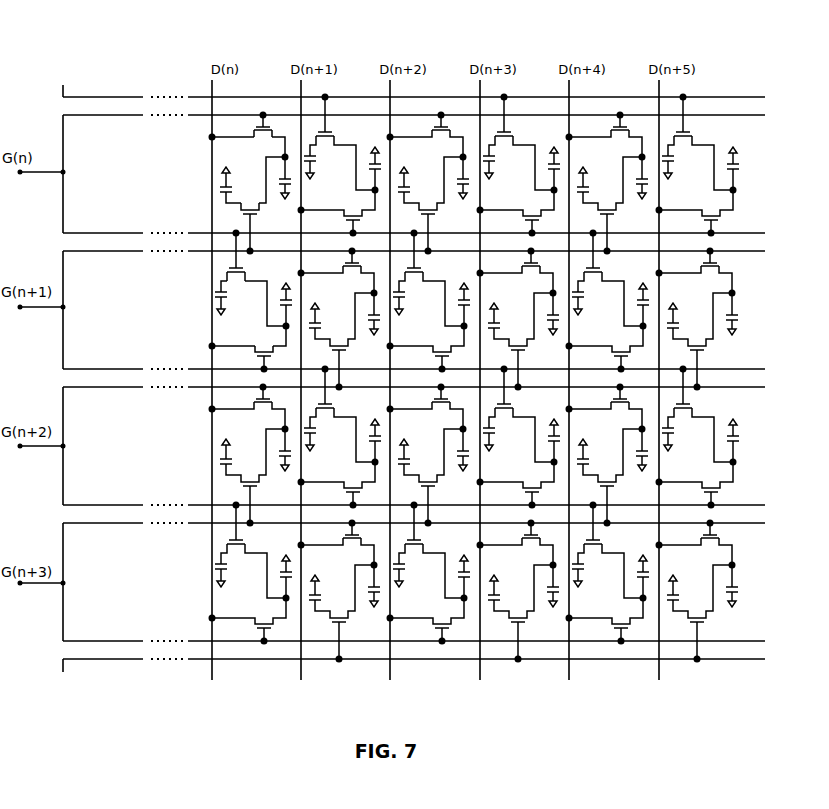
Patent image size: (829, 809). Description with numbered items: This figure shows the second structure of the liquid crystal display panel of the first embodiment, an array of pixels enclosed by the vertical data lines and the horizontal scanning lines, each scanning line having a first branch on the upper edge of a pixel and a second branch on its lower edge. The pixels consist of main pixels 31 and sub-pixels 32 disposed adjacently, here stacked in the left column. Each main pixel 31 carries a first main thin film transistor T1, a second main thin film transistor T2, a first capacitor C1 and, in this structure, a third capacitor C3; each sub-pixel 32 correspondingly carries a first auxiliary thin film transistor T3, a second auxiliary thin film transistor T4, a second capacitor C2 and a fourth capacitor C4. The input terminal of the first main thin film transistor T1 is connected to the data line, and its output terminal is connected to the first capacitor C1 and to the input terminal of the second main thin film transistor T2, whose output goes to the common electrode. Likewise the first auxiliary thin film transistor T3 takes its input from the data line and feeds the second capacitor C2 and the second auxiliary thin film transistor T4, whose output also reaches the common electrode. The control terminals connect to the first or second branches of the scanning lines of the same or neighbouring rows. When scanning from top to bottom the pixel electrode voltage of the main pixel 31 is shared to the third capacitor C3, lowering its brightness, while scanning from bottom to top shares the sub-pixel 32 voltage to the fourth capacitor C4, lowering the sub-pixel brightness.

The main pixel 31 is at (208, 128).
The sub-pixel 32 is at (184, 187).
The first main thin film transistor T1 is at (259, 138).
The second main thin film transistor T2 is at (250, 215).
The first auxiliary thin film transistor T3 is at (240, 268).
The second auxiliary thin film transistor T4 is at (264, 347).
The first capacitor C1 is at (281, 175).
The second capacitor C2 is at (280, 310).
The third capacitor C3 is at (232, 181).
The fourth capacitor C4 is at (227, 303).